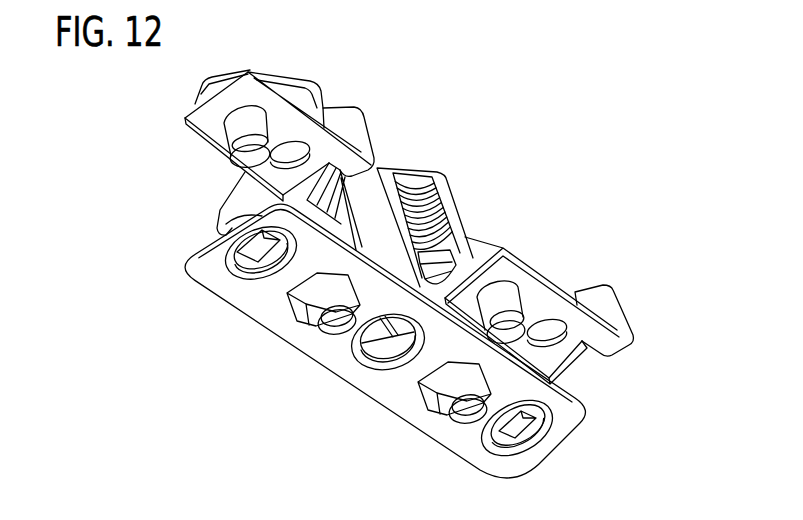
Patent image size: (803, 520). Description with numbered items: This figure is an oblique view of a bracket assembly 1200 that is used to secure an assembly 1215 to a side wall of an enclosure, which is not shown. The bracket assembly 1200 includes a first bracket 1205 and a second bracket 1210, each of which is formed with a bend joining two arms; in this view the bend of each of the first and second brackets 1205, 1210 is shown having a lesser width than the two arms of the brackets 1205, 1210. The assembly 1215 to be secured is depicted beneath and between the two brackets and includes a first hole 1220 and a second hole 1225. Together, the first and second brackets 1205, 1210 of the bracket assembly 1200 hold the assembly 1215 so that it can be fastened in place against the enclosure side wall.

The bracket assembly 1200 is at (500, 131).
The first bracket 1205 is at (211, 128).
The second bracket 1210 is at (600, 303).
The assembly 1215 is at (383, 390).
The first hole 1220 is at (254, 278).
The second hole 1225 is at (520, 453).